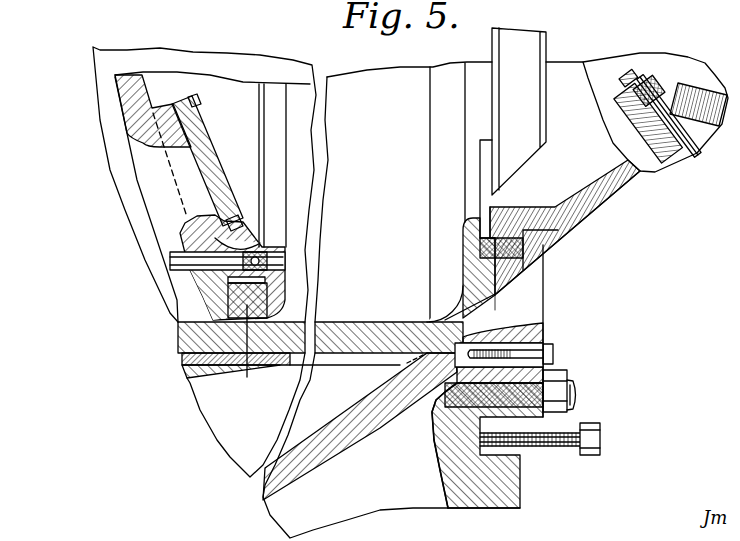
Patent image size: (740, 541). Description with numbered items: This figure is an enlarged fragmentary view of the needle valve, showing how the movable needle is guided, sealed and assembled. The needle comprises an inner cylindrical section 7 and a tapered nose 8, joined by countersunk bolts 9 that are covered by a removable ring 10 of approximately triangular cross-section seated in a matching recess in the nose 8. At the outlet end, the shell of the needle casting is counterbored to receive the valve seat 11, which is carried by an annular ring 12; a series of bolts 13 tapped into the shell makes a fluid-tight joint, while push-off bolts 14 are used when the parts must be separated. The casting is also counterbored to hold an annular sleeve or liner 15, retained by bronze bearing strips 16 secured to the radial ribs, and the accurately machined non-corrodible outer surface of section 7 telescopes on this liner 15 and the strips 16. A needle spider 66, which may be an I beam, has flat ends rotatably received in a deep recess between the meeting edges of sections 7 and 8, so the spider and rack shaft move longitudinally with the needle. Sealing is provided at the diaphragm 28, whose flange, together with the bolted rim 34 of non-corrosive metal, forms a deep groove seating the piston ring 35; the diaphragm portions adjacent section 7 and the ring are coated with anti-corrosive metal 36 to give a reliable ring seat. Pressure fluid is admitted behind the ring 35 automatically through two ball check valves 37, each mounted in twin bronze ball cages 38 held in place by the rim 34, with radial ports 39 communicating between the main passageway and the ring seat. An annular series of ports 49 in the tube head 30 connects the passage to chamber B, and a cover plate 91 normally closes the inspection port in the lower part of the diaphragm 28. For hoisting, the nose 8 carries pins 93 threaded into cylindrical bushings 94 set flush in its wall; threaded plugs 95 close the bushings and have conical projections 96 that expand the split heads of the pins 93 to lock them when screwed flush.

The inner cylindrical section 7 is at (372, 322).
The tapered nose 8 is at (610, 203).
The bolts 9 is at (463, 272).
The removable ring 10 is at (548, 213).
The valve seat 11 is at (474, 332).
The annular ring 12 is at (515, 487).
The bolts 13 is at (578, 392).
The push-off bolts 14 is at (603, 440).
The annular sleeve or liner 15 is at (258, 357).
The bronze bearing strips 16 is at (346, 358).
The diaphragm 28 is at (123, 112).
The tube head 30 is at (165, 178).
The rim 34 is at (275, 303).
The piston ring 35 is at (247, 368).
The anti-corrosive metal 36 is at (225, 278).
The ball check valves 37 is at (270, 270).
The twin bronze ball cages 38 is at (258, 254).
The radial ports 39 is at (265, 281).
The ports 49 is at (430, 418).
The needle spider 66 is at (532, 122).
The cover plate 91 is at (203, 153).
The pins 93 is at (660, 133).
The cylindrical bushings 94 is at (645, 125).
The threaded plugs 95 is at (655, 84).
The conical projections 96 is at (664, 98).